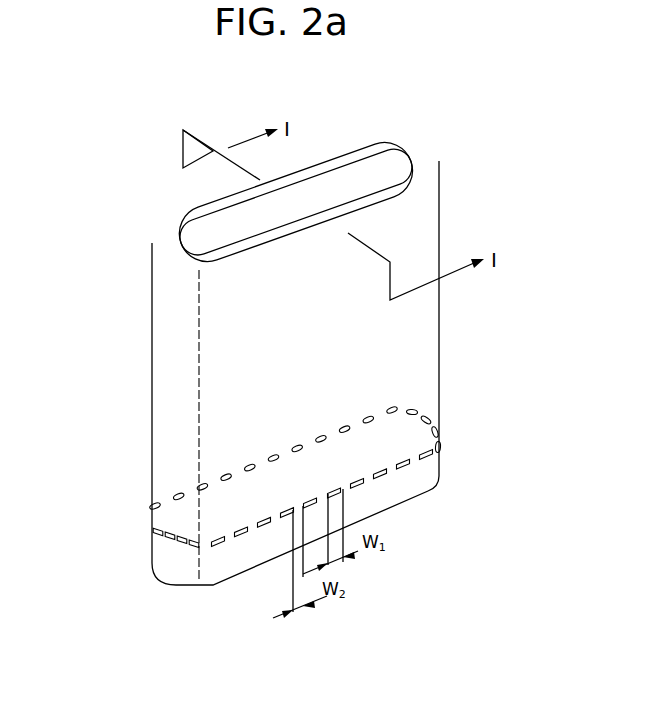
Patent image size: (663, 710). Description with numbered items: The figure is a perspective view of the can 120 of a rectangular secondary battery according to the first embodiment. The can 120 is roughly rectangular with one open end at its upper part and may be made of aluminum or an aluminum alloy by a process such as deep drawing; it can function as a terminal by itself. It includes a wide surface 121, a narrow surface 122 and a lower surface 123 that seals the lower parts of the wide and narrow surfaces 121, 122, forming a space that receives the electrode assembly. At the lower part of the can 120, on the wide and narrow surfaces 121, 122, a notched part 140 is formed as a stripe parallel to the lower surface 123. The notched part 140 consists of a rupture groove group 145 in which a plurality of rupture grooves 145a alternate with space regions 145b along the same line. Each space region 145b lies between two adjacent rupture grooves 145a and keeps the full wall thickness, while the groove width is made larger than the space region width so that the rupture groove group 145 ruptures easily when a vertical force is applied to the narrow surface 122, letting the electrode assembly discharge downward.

The can 120 is at (101, 118).
The wide surface 121 is at (433, 356).
The narrow surface 122 is at (163, 422).
The lower surface 123 is at (258, 572).
The notched part 140 is at (140, 519).
The rupture groove group 145 is at (441, 436).
The rupture groove 145a is at (387, 479).
The space region 145b is at (414, 476).